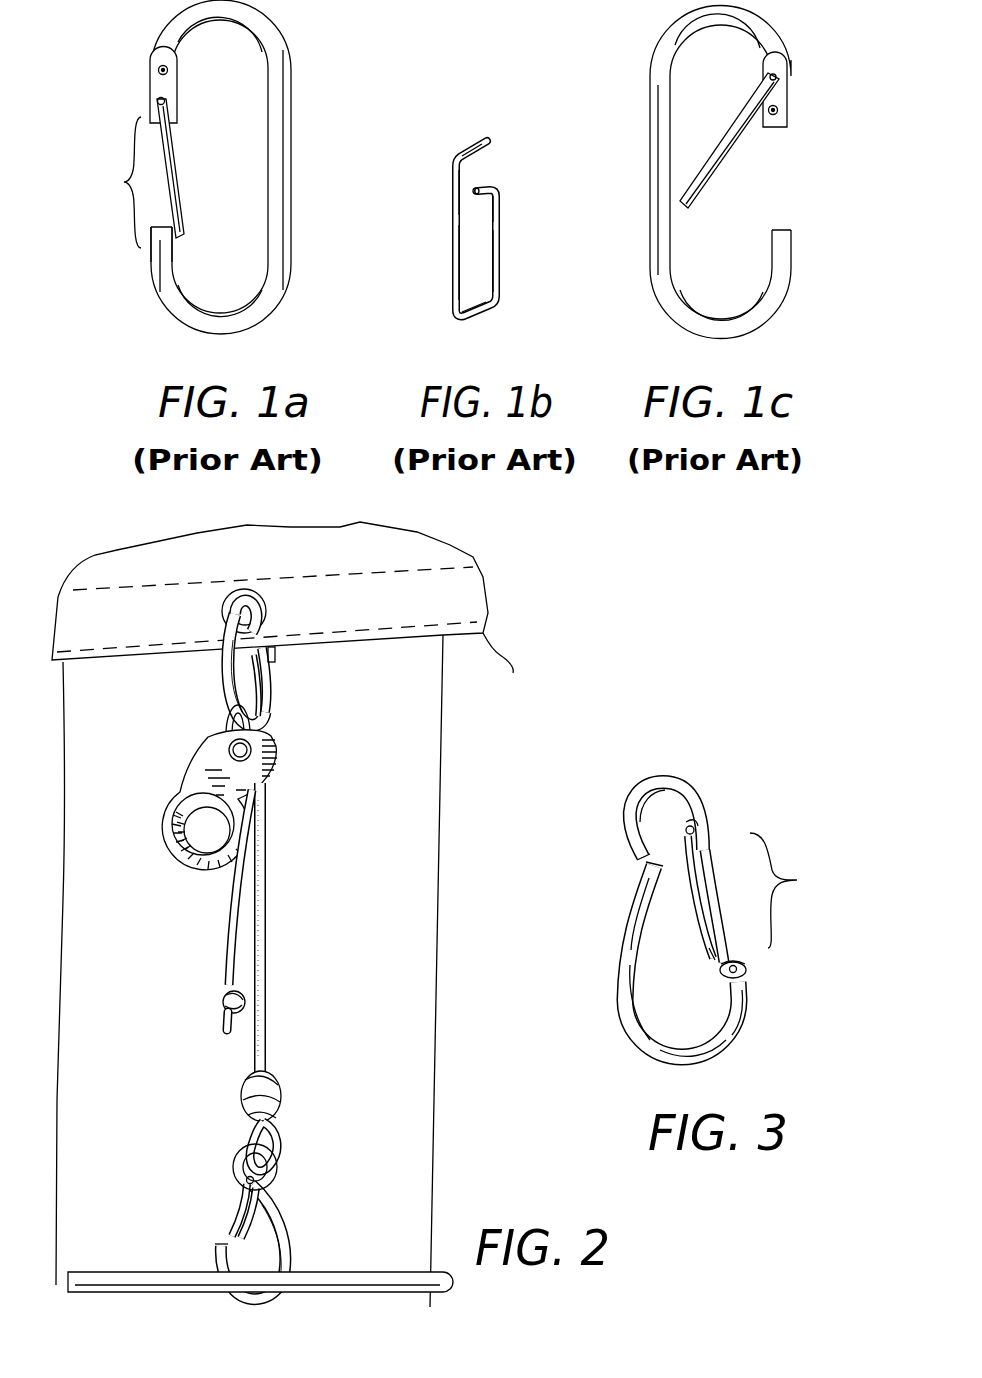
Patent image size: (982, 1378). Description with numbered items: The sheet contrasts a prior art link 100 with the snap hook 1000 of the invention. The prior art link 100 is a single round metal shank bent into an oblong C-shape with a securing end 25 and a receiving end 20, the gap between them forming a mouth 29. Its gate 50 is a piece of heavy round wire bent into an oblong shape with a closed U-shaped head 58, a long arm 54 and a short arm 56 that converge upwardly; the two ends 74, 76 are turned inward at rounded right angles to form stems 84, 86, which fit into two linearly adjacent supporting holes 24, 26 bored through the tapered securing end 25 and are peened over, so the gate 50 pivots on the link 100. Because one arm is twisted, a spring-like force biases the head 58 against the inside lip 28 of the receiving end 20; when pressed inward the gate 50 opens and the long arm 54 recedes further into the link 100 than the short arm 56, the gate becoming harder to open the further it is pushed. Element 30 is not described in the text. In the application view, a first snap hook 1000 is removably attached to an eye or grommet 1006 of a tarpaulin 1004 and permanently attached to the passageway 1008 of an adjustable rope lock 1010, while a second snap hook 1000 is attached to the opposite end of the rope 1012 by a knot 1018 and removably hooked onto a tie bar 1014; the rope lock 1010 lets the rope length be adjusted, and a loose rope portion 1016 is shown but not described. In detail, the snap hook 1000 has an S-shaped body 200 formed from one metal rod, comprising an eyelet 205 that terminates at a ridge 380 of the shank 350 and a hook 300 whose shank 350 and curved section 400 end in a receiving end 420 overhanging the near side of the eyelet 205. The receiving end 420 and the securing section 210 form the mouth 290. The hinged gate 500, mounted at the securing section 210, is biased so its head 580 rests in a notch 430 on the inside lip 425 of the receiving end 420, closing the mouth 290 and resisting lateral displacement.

In FIG. 1A, the link 100 is at (224, 167).
In FIG. 1C, the link 100 is at (771, 171).
In FIG. 1A, the receiving end 20 is at (181, 167).
In FIG. 1A, the supporting hole 24 is at (168, 70).
In FIG. 1A, the securing end 25 is at (150, 81).
In FIG. 1A, the supporting hole 26 is at (165, 104).
In FIG. 1A, the inside lip 28 is at (175, 259).
In FIG. 1A, the mouth 29 is at (99, 182).
In FIG. 1A, the gate 50 is at (187, 191).
In FIG. 1B, the gate 50 is at (479, 196).
In FIG. 1B, the long arm 54 is at (450, 254).
In FIG. 1C, the long arm 54 is at (751, 140).
In FIG. 1B, the short arm 56 is at (503, 247).
In FIG. 1C, the short arm 56 is at (742, 152).
In FIG. 1B, the head 58 is at (480, 318).
In FIG. 1B, the end 74 is at (452, 185).
In FIG. 1B, the end 76 is at (503, 200).
In FIG. 1B, the stem 84 is at (470, 140).
In FIG. 1B, the stem 86 is at (482, 183).
In FIG. 1C, the gate mounting block 30 is at (788, 77).
In FIG. 2, the snap hook 1000 is at (270, 683).
In FIG. 3, the snap hook 1000 is at (690, 902).
In FIG. 2, the tarpaulin 1004 is at (467, 603).
In FIG. 2, the eye or grommet 1006 is at (240, 603).
In FIG. 2, the passageway 1008 is at (233, 747).
In FIG. 2, the adjustable rope lock 1010 is at (242, 768).
In FIG. 2, the rope 1012 is at (266, 973).
In FIG. 2, the tie bar 1014 is at (305, 1287).
In FIG. 2, the rope tail 1016 is at (230, 955).
In FIG. 2, the knot 1018 is at (282, 1098).
In FIG. 3, the S-shaped body 200 is at (690, 869).
In FIG. 3, the eyelet 205 is at (683, 788).
In FIG. 3, the securing section 210 is at (713, 840).
In FIG. 3, the mouth 290 is at (804, 890).
In FIG. 3, the hook 300 is at (690, 977).
In FIG. 3, the shank 350 is at (620, 983).
In FIG. 3, the ridge 380 is at (636, 888).
In FIG. 3, the curved section 400 is at (722, 1058).
In FIG. 3, the receiving end 420 is at (748, 1012).
In FIG. 3, the inside lip 425 is at (737, 960).
In FIG. 3, the notch 430 is at (790, 953).
In FIG. 3, the hinged gate 500 is at (684, 926).
In FIG. 3, the head 580 is at (728, 980).